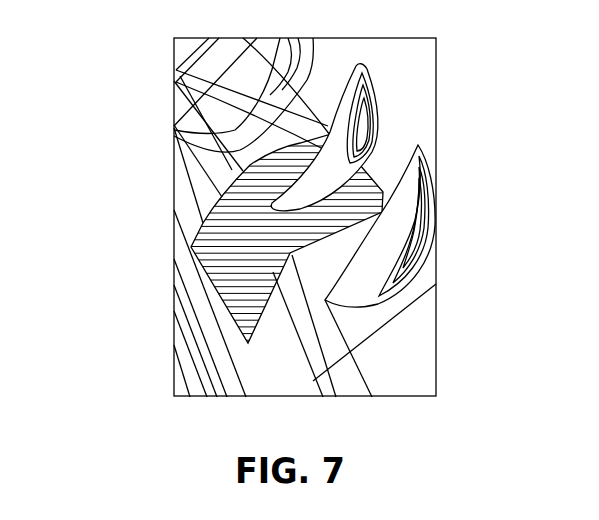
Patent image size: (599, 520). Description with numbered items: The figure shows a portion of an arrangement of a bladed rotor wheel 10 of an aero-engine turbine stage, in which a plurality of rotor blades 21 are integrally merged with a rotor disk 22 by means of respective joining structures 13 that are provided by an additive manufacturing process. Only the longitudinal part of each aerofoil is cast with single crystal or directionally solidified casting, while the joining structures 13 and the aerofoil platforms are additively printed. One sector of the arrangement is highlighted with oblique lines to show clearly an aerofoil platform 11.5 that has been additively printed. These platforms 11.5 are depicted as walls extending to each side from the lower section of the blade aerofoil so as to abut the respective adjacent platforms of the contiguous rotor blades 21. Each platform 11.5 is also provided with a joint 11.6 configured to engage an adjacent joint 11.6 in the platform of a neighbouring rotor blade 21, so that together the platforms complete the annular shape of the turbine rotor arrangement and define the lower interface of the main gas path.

The bladed rotor wheel 10 is at (140, 215).
The aerofoil platform 11.5 is at (176, 124).
The joint 11.6 is at (176, 123).
The joining structure 13 is at (200, 211).
The rotor blade 21 is at (380, 105).
The rotor disk 22 is at (192, 361).